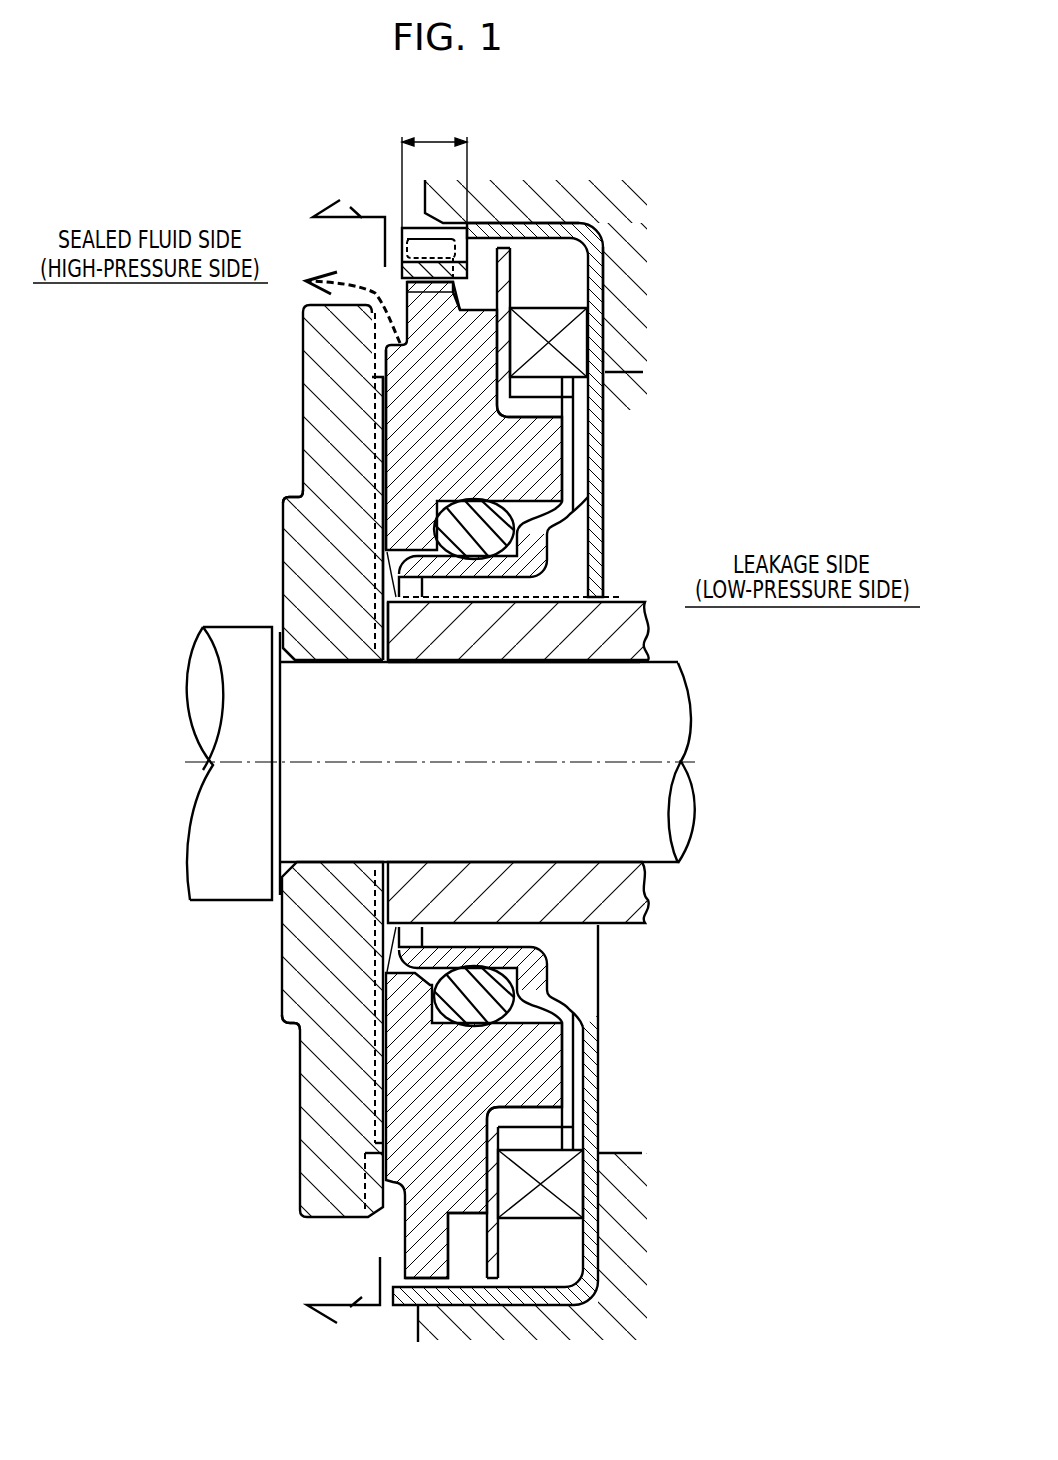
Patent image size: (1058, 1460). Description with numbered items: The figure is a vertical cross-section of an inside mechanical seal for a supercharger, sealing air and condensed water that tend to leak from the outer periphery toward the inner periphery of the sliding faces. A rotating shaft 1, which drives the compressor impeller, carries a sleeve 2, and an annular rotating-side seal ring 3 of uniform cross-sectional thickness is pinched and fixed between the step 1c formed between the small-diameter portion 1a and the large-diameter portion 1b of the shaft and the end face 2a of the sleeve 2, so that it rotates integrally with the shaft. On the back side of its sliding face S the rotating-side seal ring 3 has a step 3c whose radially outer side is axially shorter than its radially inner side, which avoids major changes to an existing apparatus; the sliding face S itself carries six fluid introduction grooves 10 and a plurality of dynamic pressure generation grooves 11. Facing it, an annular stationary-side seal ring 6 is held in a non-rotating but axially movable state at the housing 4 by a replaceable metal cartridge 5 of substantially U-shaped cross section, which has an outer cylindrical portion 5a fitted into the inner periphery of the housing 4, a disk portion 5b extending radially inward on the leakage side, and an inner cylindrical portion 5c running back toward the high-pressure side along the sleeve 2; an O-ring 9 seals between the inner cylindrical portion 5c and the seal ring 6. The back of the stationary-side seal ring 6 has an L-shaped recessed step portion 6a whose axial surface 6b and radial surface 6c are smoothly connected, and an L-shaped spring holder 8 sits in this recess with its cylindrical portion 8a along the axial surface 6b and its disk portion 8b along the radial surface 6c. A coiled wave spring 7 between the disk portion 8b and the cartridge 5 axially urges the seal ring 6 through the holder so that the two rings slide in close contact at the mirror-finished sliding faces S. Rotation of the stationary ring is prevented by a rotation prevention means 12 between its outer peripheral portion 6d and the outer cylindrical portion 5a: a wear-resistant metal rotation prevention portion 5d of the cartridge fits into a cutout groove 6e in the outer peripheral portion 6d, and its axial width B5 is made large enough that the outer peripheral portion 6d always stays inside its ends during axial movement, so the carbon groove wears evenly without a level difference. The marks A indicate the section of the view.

The rotating shaft 1 is at (562, 817).
The small-diameter portion 1a is at (433, 637).
The large-diameter portion 1b is at (226, 628).
The step 1c is at (288, 642).
The sleeve 2 is at (627, 637).
The end face 2a is at (348, 637).
The rotating-side seal ring 3 is at (303, 410).
The step 3c is at (348, 490).
The housing 4 is at (640, 253).
The cartridge 5 is at (605, 404).
The outer cylindrical portion 5a is at (520, 226).
The disk portion 5b is at (593, 432).
The inner cylindrical portion 5c is at (490, 570).
The rotation prevention portion 5d is at (405, 283).
The stationary-side seal ring 6 is at (398, 430).
The step portion 6a is at (490, 1192).
The axial surface 6b is at (567, 1110).
The radial surface 6c is at (488, 1215).
The outer peripheral portion 6d is at (447, 241).
The cutout groove 6e is at (440, 292).
The coiled wave spring 7 is at (573, 340).
The spring holder 8 is at (557, 212).
The cylindrical portion 8a is at (563, 1148).
The disk portion 8b is at (500, 1227).
The O-ring 9 is at (493, 537).
The fluid introduction grooves 10 is at (370, 1183).
The dynamic pressure generation grooves 11 is at (377, 1030).
The rotation prevention means 12 is at (413, 228).
The sliding faces S is at (373, 458).
The axial width B5 is at (434, 167).
The section line A- A is at (346, 770).